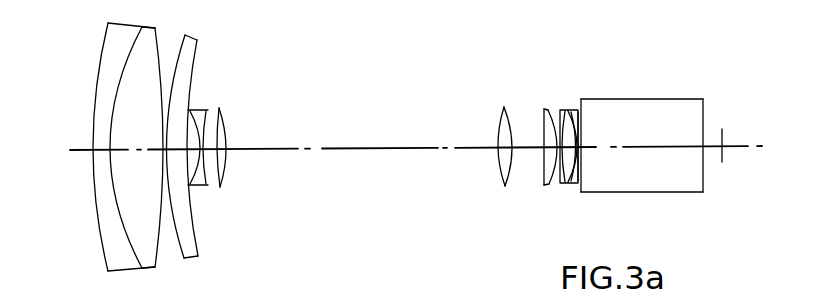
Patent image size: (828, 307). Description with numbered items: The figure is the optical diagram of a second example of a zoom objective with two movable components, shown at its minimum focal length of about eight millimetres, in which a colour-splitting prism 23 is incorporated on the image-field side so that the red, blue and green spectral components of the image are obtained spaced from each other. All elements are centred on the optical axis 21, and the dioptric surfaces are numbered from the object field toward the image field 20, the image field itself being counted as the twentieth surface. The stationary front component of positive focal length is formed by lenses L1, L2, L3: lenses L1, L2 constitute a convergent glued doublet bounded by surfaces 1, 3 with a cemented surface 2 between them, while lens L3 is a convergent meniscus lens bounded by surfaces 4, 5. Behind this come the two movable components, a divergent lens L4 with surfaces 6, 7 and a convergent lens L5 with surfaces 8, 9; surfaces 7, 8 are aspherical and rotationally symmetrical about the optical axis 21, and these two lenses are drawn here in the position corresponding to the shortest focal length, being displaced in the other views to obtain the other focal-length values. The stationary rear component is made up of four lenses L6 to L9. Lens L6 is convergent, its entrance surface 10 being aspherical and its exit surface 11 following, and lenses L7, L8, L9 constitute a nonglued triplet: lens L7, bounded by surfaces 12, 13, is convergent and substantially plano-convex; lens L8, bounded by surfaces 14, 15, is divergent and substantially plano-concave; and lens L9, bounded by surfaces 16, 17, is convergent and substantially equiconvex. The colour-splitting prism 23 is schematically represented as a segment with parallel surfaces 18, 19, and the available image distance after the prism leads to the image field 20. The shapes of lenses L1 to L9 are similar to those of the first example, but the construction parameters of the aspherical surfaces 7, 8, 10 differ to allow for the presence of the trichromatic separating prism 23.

The dioptric surface 1 is at (98, 225).
The dioptric surface 2 is at (131, 246).
The dioptric surface 3 is at (158, 245).
The dioptric surface 4 is at (184, 262).
The dioptric surface 5 is at (204, 233).
The dioptric surface 6 is at (196, 182).
The aspherical dioptric surface 7 is at (221, 176).
The aspherical dioptric surface 8 is at (225, 172).
The dioptric surface 9 is at (226, 160).
The aspherical entrance surface 10 is at (497, 163).
The dioptric surface 11 is at (513, 172).
The dioptric surface 12 is at (546, 167).
The dioptric surface 13 is at (553, 183).
The dioptric surface 14 is at (565, 178).
The dioptric surface 15 is at (584, 152).
The dioptric surface 16 is at (583, 157).
The dioptric surface 17 is at (577, 130).
The dioptric surface 18 is at (582, 180).
The dioptric surface 19 is at (704, 166).
The image field 20 is at (723, 132).
The optical axis 21 is at (405, 147).
The colour-splitting prism 23 is at (663, 145).
The lens L1 is at (107, 151).
The lens L2 is at (120, 160).
The convergent meniscus lens L3 is at (200, 164).
The divergent lens L4 is at (232, 133).
The convergent lens L5 is at (245, 147).
The convergent lens L6 is at (483, 128).
The convergent plano-convex lens L7 is at (548, 133).
The divergent plano-concave lens L8 is at (626, 130).
The convergent equiconvex lens L9 is at (629, 145).